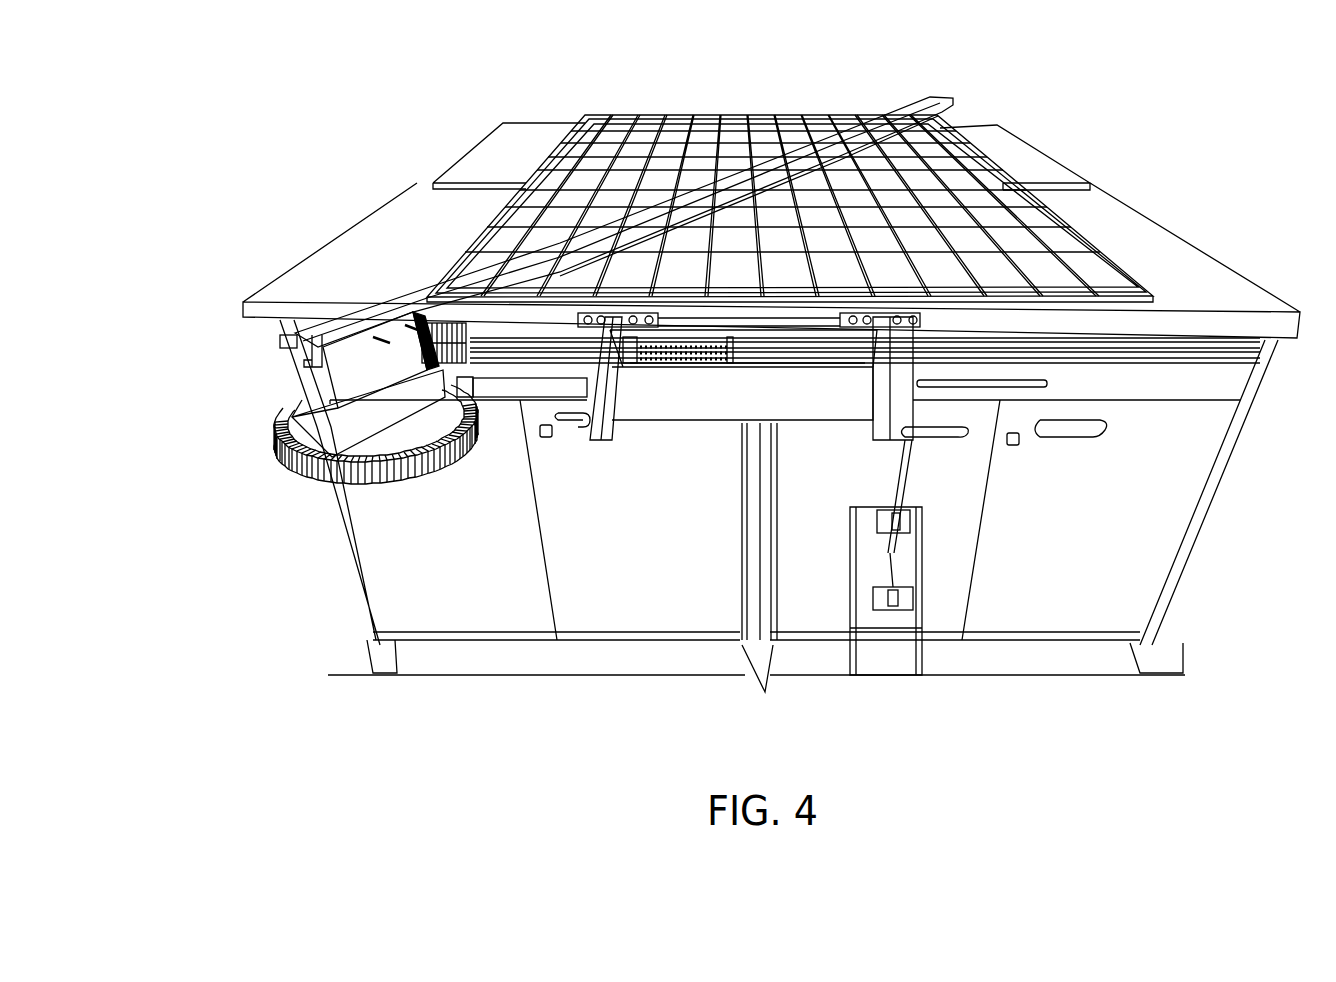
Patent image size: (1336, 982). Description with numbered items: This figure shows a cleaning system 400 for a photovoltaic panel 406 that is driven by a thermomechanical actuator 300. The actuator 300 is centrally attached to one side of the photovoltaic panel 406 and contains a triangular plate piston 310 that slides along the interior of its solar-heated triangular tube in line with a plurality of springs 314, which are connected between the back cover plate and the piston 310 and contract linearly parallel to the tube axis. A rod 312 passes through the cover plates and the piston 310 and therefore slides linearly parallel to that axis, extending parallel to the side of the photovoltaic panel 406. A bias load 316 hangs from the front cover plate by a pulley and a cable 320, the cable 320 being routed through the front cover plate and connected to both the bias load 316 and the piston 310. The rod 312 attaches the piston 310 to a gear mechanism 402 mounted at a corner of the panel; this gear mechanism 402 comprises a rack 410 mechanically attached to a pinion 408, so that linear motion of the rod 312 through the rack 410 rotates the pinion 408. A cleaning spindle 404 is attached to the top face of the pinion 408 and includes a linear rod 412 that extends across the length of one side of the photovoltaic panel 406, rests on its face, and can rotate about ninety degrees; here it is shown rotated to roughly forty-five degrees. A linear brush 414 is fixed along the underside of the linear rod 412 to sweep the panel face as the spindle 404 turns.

The cleaning system 400 is at (198, 100).
The cleaning spindle 404 is at (335, 303).
The photovoltaic panel 406 is at (950, 126).
The linear brush 414 is at (873, 118).
The linear rod 412 is at (410, 297).
The rack 410 is at (452, 320).
The pinion 408 is at (397, 447).
The gear mechanism 402 is at (373, 500).
The piston 310 is at (613, 313).
The thermomechanical actuator 300 is at (810, 448).
The plurality of springs 314 is at (672, 343).
The bias load 316 is at (903, 660).
The cable 320 is at (897, 488).
The rod 312 is at (513, 383).